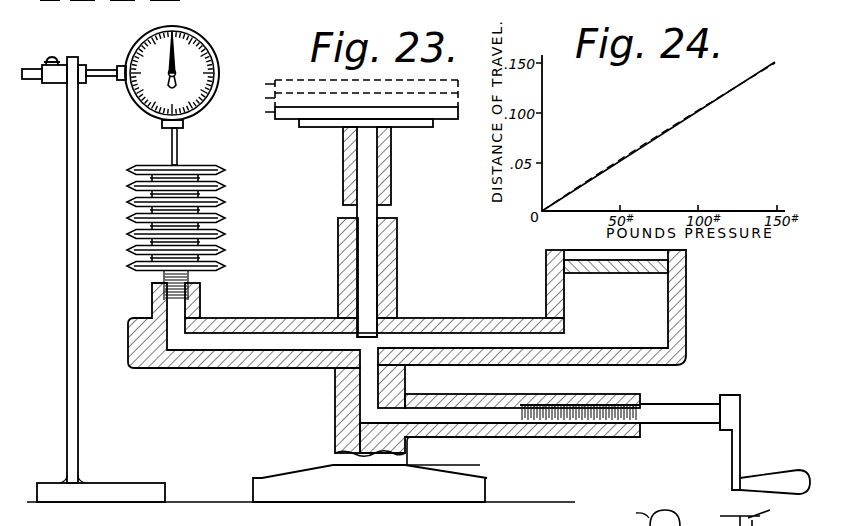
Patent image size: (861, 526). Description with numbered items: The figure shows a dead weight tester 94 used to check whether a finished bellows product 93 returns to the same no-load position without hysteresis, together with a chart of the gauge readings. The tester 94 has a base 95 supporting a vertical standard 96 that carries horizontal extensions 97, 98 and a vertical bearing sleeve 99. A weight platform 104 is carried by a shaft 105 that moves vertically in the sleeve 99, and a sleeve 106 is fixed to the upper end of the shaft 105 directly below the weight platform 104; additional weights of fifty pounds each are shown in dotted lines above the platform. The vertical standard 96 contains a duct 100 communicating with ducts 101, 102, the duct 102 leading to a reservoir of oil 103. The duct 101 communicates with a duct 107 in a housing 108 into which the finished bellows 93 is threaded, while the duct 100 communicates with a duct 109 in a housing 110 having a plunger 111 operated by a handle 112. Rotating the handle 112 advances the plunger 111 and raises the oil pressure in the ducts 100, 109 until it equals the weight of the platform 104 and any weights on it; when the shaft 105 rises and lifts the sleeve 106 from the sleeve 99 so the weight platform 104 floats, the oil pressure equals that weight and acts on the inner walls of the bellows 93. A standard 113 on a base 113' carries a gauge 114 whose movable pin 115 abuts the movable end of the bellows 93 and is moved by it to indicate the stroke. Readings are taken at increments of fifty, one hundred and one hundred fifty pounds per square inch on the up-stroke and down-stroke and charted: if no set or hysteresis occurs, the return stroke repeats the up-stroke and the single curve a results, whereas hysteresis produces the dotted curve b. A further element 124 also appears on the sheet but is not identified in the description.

In FIG. 23, the bellows 93 is at (226, 218).
In FIG. 23, the testing frame unit 94 is at (466, 275).
In FIG. 23, the pedestal base 95 is at (279, 482).
In FIG. 23, the vertical post 96 is at (346, 405).
In FIG. 23, the upper beam left portion 97 is at (270, 318).
In FIG. 23, the upper beam right portion 98 is at (466, 318).
In FIG. 23, the guide column 99 is at (392, 255).
In FIG. 23, the guide wall 100 is at (362, 379).
In FIG. 23, the lower beam 101 is at (274, 338).
In FIG. 23, the slot 102 is at (500, 340).
In FIG. 23, the end block 103 is at (645, 306).
In FIG. 23, the load table 104 is at (291, 119).
In FIG. 23, the right support column 105 is at (370, 179).
In FIG. 23, the left support column 106 is at (343, 181).
In FIG. 23, the left block 107 is at (175, 309).
In FIG. 23, the clamp block 108 is at (200, 293).
In FIG. 23, the slide rod 109 is at (484, 417).
In FIG. 23, the nut frame 110 is at (528, 390).
In FIG. 23, the feed screw 111 is at (523, 418).
In FIG. 23, the crank handle 112 is at (773, 480).
In FIG. 23, the stand post 113 is at (74, 270).
In FIG. 23, the stand base 113' is at (114, 470).
In FIG. 23, the dial gauge 114 is at (131, 96).
In FIG. 23, the gauge stem 115 is at (172, 139).
In FIG. 23, the element of next figure 124 is at (685, 514).
In FIG. 24, the curve a is at (660, 138).
In FIG. 24, the curve b is at (672, 148).